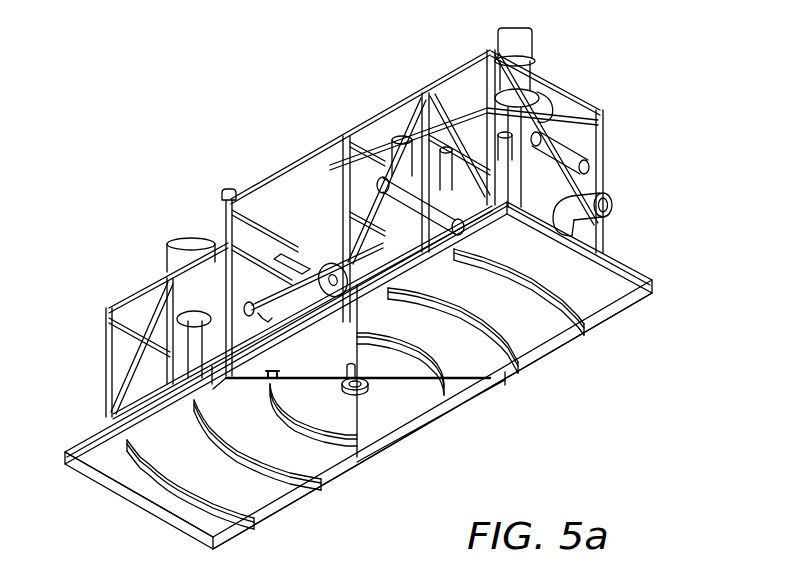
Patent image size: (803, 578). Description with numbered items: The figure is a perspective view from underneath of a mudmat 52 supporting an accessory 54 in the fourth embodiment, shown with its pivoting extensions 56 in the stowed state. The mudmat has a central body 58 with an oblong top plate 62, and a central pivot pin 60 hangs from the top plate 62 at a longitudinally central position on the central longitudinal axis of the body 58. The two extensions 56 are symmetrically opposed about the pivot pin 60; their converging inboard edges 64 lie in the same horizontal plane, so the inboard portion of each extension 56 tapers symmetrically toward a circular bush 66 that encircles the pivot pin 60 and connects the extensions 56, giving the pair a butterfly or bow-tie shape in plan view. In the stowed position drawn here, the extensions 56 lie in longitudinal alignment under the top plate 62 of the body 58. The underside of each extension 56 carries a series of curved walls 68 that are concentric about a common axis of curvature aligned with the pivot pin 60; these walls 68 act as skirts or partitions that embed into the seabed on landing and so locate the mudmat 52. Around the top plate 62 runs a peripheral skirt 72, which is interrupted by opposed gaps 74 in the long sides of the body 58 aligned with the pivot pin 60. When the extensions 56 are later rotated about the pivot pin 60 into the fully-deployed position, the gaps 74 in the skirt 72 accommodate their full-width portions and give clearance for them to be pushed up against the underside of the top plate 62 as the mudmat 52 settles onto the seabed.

The mudmat 52 is at (369, 289).
The accessory 54 is at (545, 118).
The extensions 56 is at (112, 412).
The central body 58 is at (147, 498).
The central pivot pin 60 is at (365, 395).
The oblong top plate 62 is at (433, 392).
The converging inboard edges 64 is at (306, 377).
The circular bush 66 is at (349, 374).
The curved walls 68 is at (277, 478).
The peripheral skirt 72 is at (636, 270).
The gaps 74 is at (425, 424).